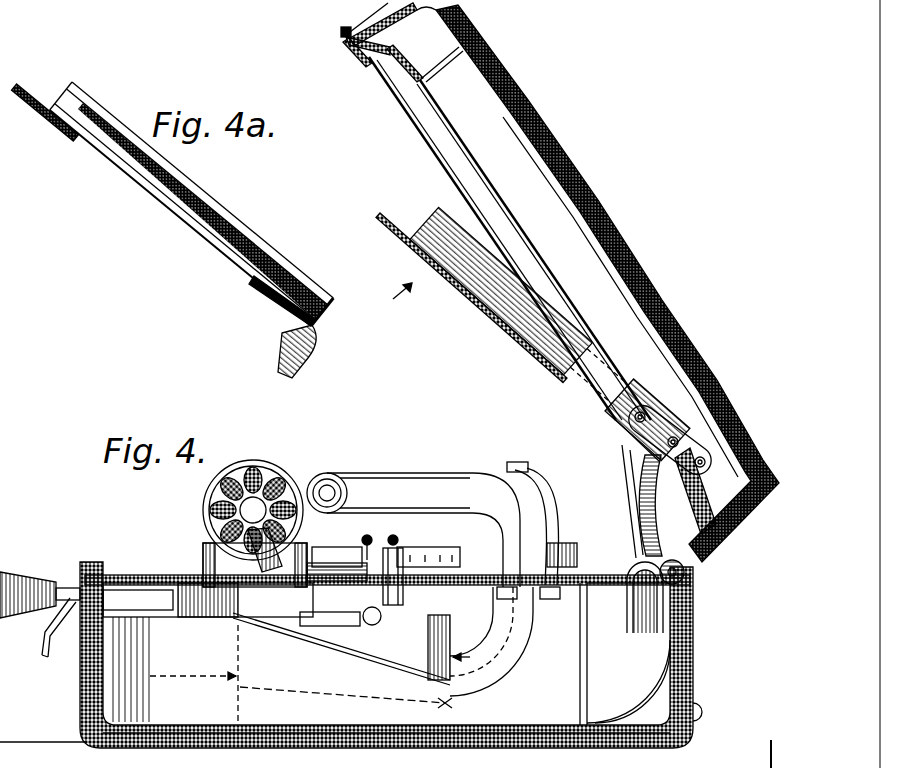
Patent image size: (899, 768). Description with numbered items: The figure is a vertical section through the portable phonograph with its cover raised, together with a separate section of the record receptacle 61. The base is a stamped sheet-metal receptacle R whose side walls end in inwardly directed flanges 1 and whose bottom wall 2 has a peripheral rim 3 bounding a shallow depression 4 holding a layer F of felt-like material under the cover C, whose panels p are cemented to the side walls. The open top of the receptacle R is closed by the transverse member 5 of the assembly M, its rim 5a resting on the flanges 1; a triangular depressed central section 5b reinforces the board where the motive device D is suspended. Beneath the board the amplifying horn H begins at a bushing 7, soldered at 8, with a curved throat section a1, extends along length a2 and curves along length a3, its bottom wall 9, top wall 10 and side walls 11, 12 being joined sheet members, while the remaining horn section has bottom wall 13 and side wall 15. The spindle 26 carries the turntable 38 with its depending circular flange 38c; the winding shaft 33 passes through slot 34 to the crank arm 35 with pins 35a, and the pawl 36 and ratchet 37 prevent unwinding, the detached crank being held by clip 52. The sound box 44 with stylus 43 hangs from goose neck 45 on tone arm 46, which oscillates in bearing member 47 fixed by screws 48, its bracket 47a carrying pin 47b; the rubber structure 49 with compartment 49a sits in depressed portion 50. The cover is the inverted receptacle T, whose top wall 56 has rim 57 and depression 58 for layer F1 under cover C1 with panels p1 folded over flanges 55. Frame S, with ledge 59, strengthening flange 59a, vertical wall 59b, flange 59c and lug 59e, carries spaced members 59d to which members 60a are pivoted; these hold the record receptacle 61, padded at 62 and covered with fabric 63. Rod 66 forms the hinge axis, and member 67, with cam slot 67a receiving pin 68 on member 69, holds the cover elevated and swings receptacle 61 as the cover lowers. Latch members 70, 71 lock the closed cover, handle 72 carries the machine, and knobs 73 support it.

In FIG. 4, the latch member 71 is at (341, 30).
In FIG. 4, the panels p1 is at (716, 560).
In FIG. 4, the inwardly directed flanges 55 is at (380, 28).
In FIG. 4, the ledge 59 is at (440, 64).
In FIG. 4, the flange 59c is at (355, 50).
In FIG. 4, the vertical wall 59b is at (375, 65).
In FIG. 4, the frame member S is at (392, 70).
In FIG. 4, the flange or lug 59e is at (447, 63).
In FIG. 4, the strengthening flange 59a is at (524, 232).
In FIG. 4, the layer of felt-like material F1 is at (596, 214).
In FIG. 4, the shallow depression 58 is at (628, 258).
In FIG. 4, the receptacle T is at (636, 288).
In FIG. 4, the cover C1 is at (660, 306).
In FIG. 4, the top wall 56 is at (696, 367).
In FIG. 4A, the receptacle 61 is at (203, 257).
In FIG. 4, the receptacle 61 is at (510, 325).
In FIG. 4, the pivoted member 60a is at (713, 423).
In FIG. 4, the peripheral rim 57 is at (768, 480).
In FIG. 4, the spaced members 59d is at (706, 498).
In FIG. 4A, the member 69 is at (293, 360).
In FIG. 4, the member 69 is at (643, 500).
In FIG. 4, the pin 68 is at (643, 537).
In FIG. 4, the member 67 is at (637, 560).
In FIG. 4, the supporting knobs 73 is at (745, 533).
In FIG. 4, the rod 66 is at (693, 570).
In FIG. 4, the inwardly directed flanges 1 is at (693, 597).
In FIG. 4, the cam slot 67a is at (633, 607).
In FIG. 4, the clip or resilient member 52 is at (640, 635).
In FIG. 4, the panels p is at (83, 660).
In FIG. 4, the assembly M is at (670, 673).
In FIG. 4, the side wall 15 is at (586, 682).
In FIG. 4, the bottom wall member 13 is at (660, 697).
In FIG. 4, the sound box 44 is at (272, 487).
In FIG. 4, the goose neck 45 is at (313, 480).
In FIG. 4, the tone arm or taper tube 46 is at (410, 472).
In FIG. 4, the pin 47b is at (513, 466).
In FIG. 4, the crank arm 35 is at (403, 532).
In FIG. 4, the shaft or spindle 26 is at (377, 535).
In FIG. 4, the screws 48 is at (497, 527).
In FIG. 4, the bracket or arm 47a is at (522, 474).
In FIG. 4, the apertured bearing member 47 is at (542, 540).
In FIG. 4, the first compartment 49a is at (212, 500).
In FIG. 4, the structure 49 is at (207, 542).
In FIG. 4, the turntable 38 is at (203, 567).
In FIG. 4, the rim or flange 5a is at (100, 570).
In FIG. 4, the transverse member 5 is at (140, 573).
In FIG. 4, the pins 35a is at (363, 540).
In FIG. 4, the circular flange 38c is at (420, 540).
In FIG. 4, the elongated slot 34 is at (337, 571).
In FIG. 4, the handle 72 is at (30, 558).
In FIG. 4, the latch member 70 is at (47, 622).
In FIG. 4, the cover C is at (83, 687).
In FIG. 4, the receptacle R is at (88, 652).
In FIG. 4, the depressed portion 50 is at (253, 593).
In FIG. 4, the stylus or needle 43 is at (307, 587).
In FIG. 4, the pawl 36 is at (370, 620).
In FIG. 4, the top wall 10 is at (478, 745).
In FIG. 4, the shaft 33 is at (410, 607).
In FIG. 4, the ratchet 37 is at (407, 600).
In FIG. 4, the soldered joint 8 is at (480, 613).
In FIG. 4, the bushing or adapter 7 is at (563, 592).
In FIG. 4, the motive device D is at (527, 657).
In FIG. 4, the curved throat section a1 is at (482, 638).
In FIG. 4, the amplifying horn H is at (543, 690).
In FIG. 4, the horn length a3 is at (194, 673).
In FIG. 4, the horn length a2 is at (346, 692).
In FIG. 4, the depressed central section 5b is at (302, 636).
In FIG. 4, the bottom wall 9 is at (93, 737).
In FIG. 4, the peripheral rim 3 is at (113, 742).
In FIG. 4, the shallow depression 4 is at (162, 745).
In FIG. 4, the bottom wall 2 is at (213, 748).
In FIG. 4, the layer of felt-like material F is at (335, 748).
In FIG. 4, the side wall 11 is at (375, 745).
In FIG. 4, the side wall 12 is at (420, 745).
In FIG. 4A, the padding 62 is at (230, 240).
In FIG. 4A, the layer of fabric 63 is at (37, 117).